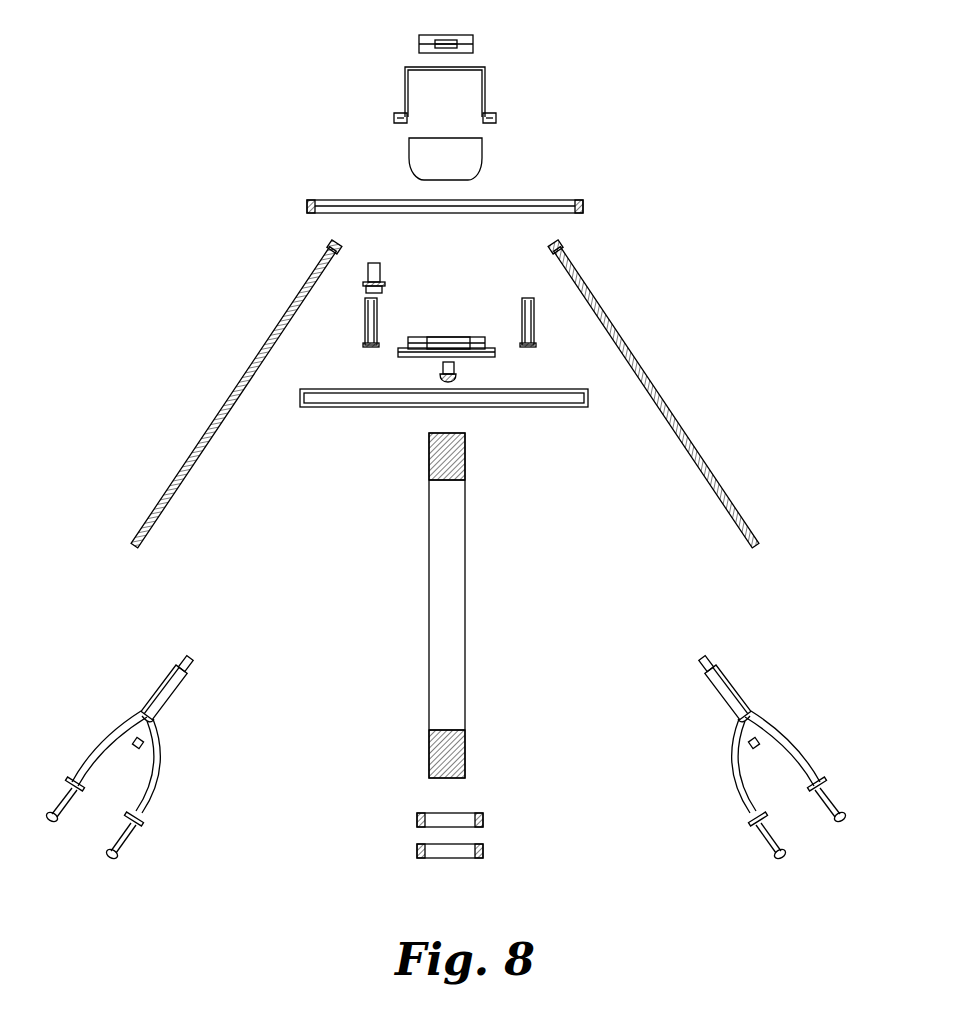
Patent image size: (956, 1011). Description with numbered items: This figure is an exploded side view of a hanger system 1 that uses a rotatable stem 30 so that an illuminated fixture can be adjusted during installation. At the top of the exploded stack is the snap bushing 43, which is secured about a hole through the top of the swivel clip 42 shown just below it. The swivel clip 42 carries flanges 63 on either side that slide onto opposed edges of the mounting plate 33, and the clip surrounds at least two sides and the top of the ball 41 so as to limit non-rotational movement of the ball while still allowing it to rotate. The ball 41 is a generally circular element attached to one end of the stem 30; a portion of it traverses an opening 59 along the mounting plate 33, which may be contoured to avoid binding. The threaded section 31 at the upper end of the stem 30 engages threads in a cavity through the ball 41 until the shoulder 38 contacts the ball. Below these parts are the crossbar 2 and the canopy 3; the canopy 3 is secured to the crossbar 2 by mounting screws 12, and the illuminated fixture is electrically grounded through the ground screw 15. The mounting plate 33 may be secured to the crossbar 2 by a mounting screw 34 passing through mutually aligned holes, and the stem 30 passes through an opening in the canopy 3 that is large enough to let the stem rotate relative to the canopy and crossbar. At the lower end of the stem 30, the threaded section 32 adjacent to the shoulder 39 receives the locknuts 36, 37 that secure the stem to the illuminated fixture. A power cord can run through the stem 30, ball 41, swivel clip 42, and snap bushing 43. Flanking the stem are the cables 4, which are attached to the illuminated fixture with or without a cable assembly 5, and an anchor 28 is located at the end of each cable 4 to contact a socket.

The hanger system 1 is at (150, 226).
The crossbar 2 is at (366, 199).
The canopy 3 is at (560, 408).
The cables 4 is at (222, 405).
The cable assembly 5 is at (128, 688).
The mounting screws 12 is at (364, 325).
The ground screw 15 is at (383, 275).
The anchor 28 is at (328, 244).
The stem 30 is at (442, 572).
The threaded section 31 is at (430, 448).
The threaded section 32 is at (430, 757).
The mounting plate 33 is at (471, 339).
The mounting screw 34 is at (440, 373).
The locknut 36 is at (485, 818).
The locknut 37 is at (485, 848).
The shoulder 38 is at (430, 480).
The shoulder 39 is at (432, 732).
The ball 41 is at (482, 161).
The swivel clip 42 is at (488, 86).
The snap bushing 43 is at (473, 40).
The opening 59 is at (447, 337).
The flanges 63 is at (394, 117).